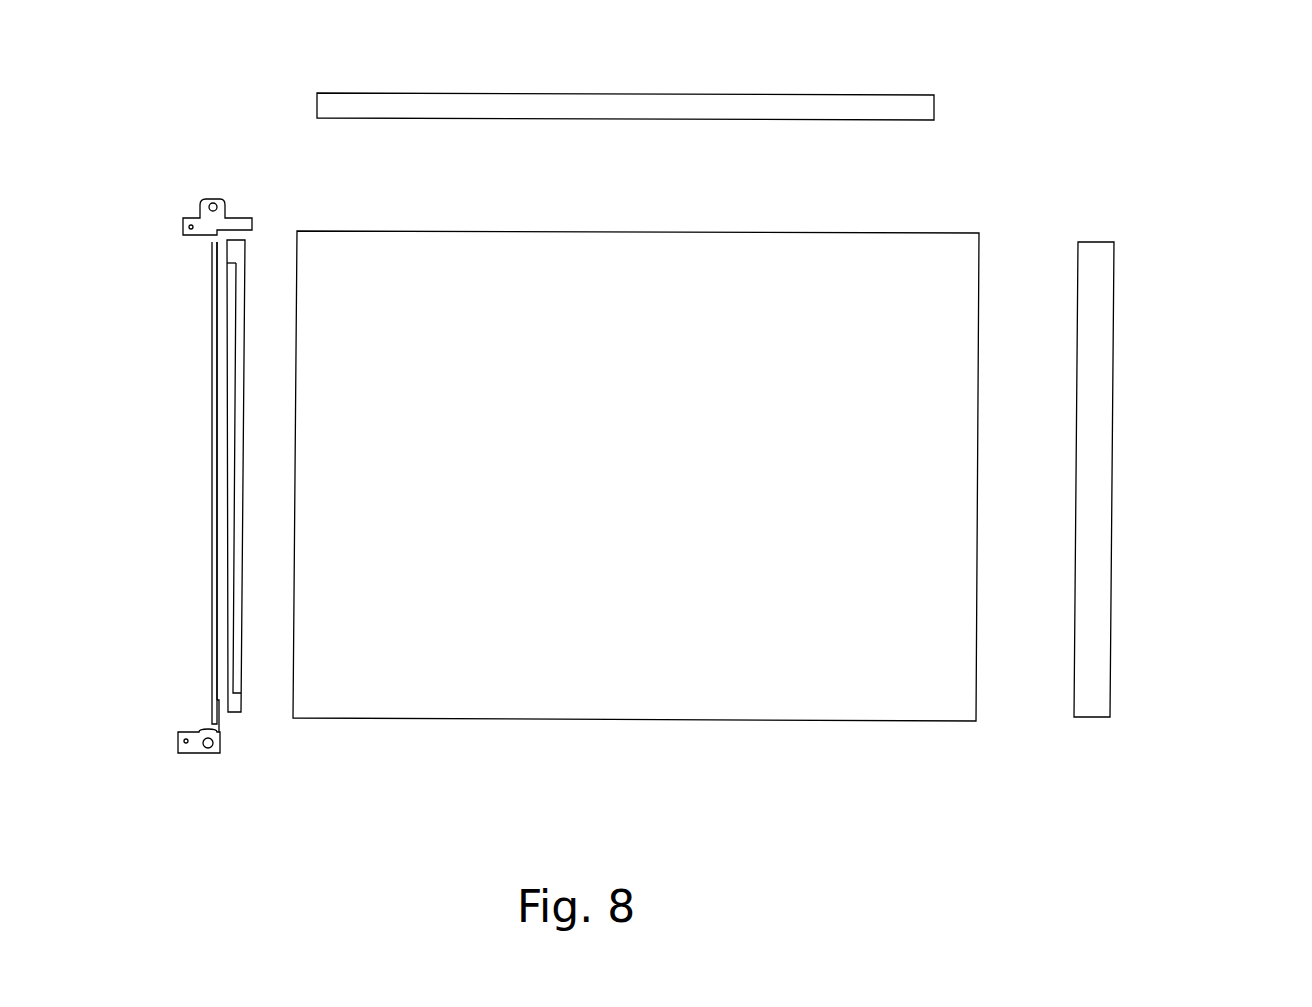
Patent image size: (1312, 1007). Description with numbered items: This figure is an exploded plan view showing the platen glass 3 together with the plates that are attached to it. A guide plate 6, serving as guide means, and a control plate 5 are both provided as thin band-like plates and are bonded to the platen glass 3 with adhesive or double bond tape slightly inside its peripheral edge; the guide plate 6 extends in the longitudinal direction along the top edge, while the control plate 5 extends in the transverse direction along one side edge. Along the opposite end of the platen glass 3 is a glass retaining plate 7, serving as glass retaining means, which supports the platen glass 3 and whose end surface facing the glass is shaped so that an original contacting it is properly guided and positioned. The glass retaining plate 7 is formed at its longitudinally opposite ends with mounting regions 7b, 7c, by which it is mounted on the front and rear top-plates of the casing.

The platen glass 3 is at (885, 243).
The control plate 5 is at (1098, 490).
The guide plate 6 is at (917, 110).
The glass retaining plate 7 is at (222, 492).
The mounting region 7b is at (216, 228).
The mounting region 7c is at (192, 740).